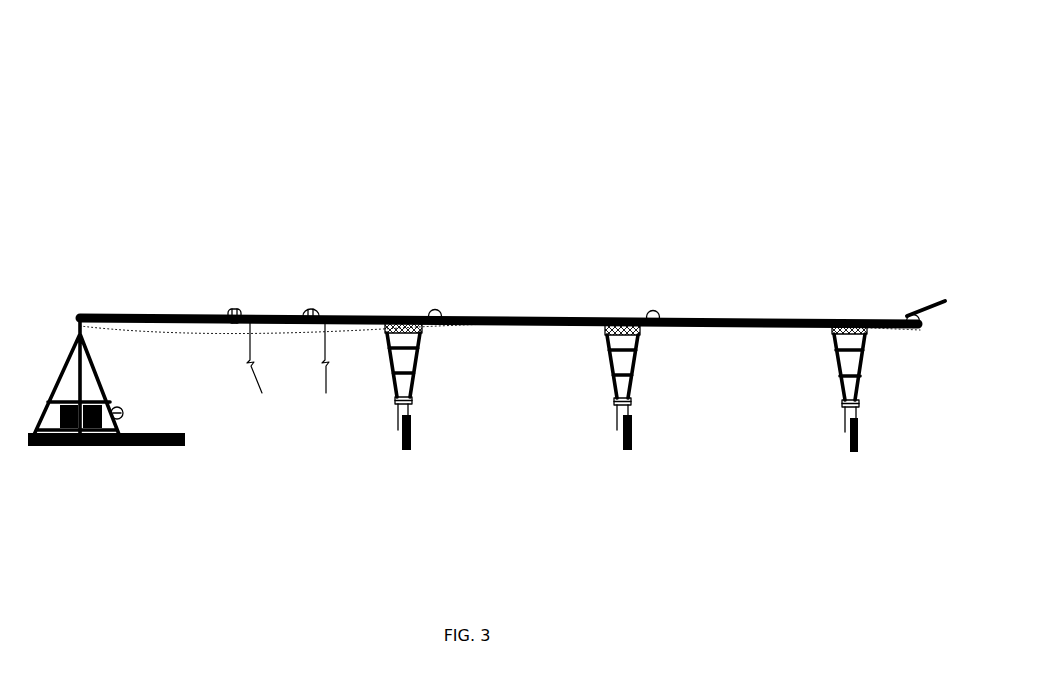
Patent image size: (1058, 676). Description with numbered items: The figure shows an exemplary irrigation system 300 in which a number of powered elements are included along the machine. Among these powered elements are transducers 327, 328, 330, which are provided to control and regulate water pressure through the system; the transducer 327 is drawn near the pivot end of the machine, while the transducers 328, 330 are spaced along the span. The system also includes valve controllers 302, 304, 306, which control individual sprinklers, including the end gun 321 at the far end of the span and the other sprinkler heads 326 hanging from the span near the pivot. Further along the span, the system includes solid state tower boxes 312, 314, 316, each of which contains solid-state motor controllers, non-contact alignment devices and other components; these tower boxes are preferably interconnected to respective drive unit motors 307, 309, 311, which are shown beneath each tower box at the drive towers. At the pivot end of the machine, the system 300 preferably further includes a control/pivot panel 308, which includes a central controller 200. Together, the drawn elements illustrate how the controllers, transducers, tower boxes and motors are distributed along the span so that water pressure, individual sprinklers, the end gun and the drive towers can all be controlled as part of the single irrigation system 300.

The system 300 is at (507, 71).
The central controller 200 is at (112, 428).
The valve controller 302 is at (233, 310).
The valve controller 304 is at (311, 310).
The valve controller 306 is at (908, 316).
The drive unit motor 307 is at (413, 401).
The control/pivot panel 308 is at (106, 402).
The drive unit motor 309 is at (632, 402).
The drive unit motor 311 is at (860, 404).
The solid state tower box 312 is at (391, 316).
The solid state tower box 314 is at (612, 318).
The solid state tower box 316 is at (843, 320).
The end gun 321 is at (937, 300).
The sprinkler heads 326 is at (326, 394).
The transducer 327 is at (124, 413).
The transducer 328 is at (436, 310).
The transducer 330 is at (655, 311).